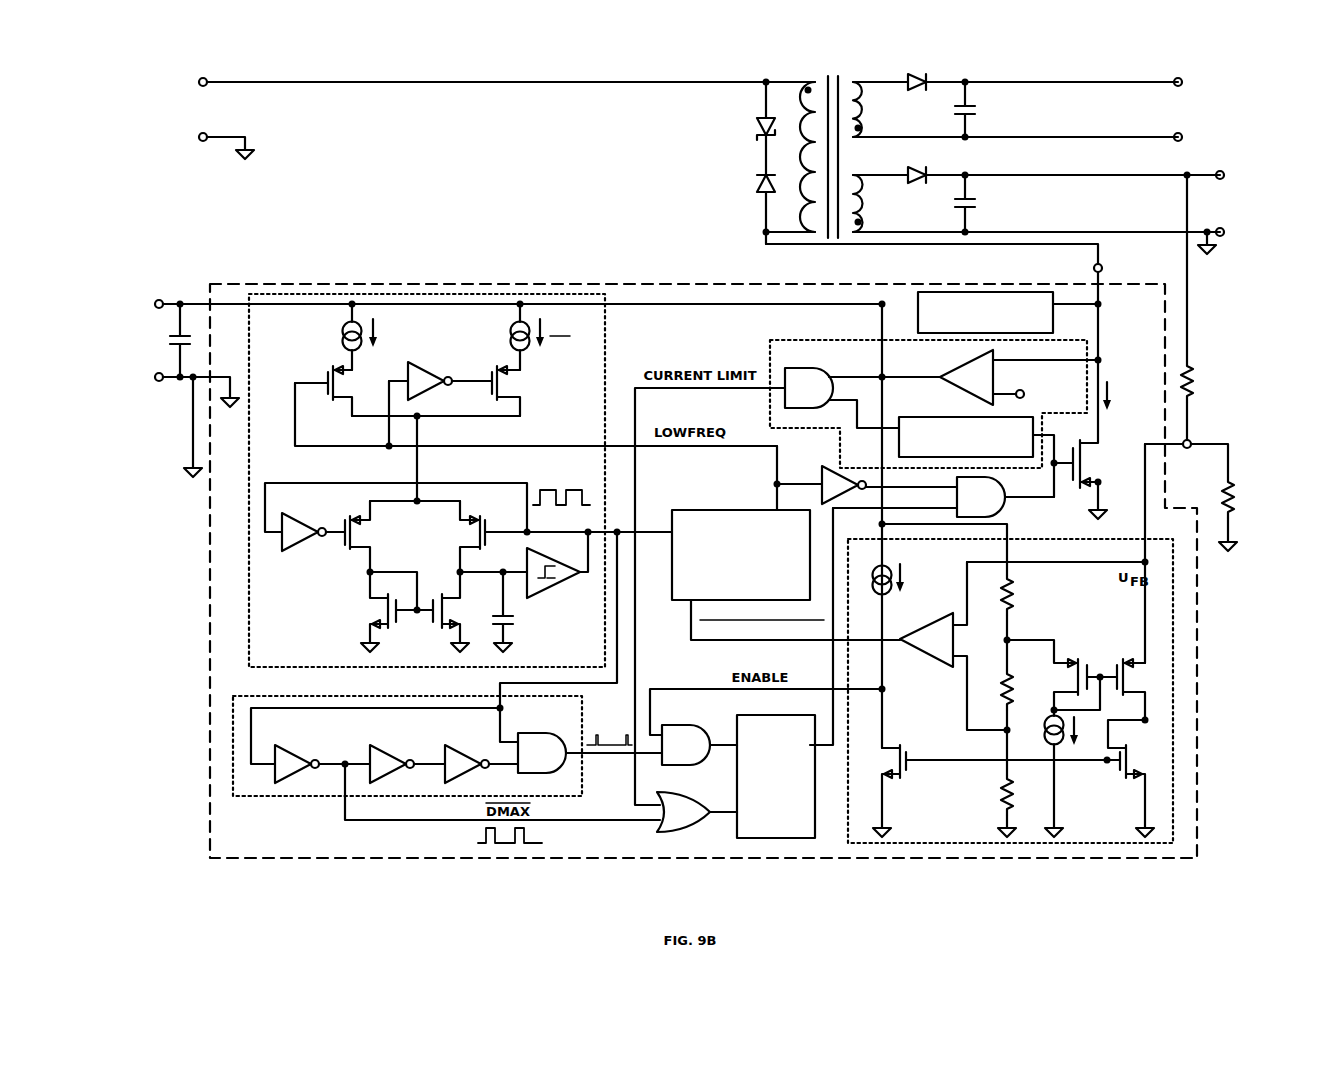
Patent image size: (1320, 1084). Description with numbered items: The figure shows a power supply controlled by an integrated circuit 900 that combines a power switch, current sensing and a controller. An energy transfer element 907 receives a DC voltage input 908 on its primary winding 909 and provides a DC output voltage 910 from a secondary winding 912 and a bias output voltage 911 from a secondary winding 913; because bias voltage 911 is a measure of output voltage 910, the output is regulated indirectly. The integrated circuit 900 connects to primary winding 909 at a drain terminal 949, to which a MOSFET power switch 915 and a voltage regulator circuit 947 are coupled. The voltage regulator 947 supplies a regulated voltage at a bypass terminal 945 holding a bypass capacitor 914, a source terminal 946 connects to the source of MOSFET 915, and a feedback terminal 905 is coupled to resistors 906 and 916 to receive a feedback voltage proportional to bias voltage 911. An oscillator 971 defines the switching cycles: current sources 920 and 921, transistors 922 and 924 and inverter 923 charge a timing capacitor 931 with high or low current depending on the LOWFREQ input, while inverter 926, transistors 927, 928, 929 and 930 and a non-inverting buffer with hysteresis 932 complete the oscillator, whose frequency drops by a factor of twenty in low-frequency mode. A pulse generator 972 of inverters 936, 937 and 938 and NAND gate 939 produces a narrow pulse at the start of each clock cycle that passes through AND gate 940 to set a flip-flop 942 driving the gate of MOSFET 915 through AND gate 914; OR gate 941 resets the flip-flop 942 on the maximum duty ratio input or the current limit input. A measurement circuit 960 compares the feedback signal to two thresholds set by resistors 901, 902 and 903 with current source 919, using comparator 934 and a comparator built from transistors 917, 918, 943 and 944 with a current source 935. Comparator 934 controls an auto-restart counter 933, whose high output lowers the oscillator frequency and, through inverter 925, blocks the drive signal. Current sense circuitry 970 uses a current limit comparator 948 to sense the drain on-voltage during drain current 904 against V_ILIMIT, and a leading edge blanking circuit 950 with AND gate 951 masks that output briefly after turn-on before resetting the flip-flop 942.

The integrated circuit 900 is at (703, 559).
The resistor 901 is at (1013, 601).
The resistor 902 is at (994, 691).
The resistor 903 is at (994, 783).
The drain current 904 is at (1124, 396).
The feedback terminal 905 is at (1186, 461).
The resistor 906 is at (1203, 307).
The energy transfer element 907 is at (806, 149).
The DC voltage input 908 is at (470, 137).
The primary winding 909 is at (786, 162).
The DC output voltage 910 is at (1120, 110).
The bias output voltage 911 is at (1155, 222).
The secondary winding 912 is at (1015, 107).
The secondary winding 913 is at (1036, 201).
The bypass capacitor 914 is at (592, 410).
The MOSFET power switch 915 is at (1093, 411).
The resistor 916 is at (1250, 533).
The transistor 917 is at (1062, 678).
The transistor 918 is at (1147, 689).
The current source 919 is at (1059, 777).
The current source 920 is at (355, 336).
The current source 921 is at (524, 336).
The transistor 922 is at (339, 391).
The inverter 923 is at (440, 373).
The transistor 924 is at (521, 391).
The inverter 925 is at (821, 483).
The inverter 926 is at (396, 528).
The transistor 927 is at (372, 536).
The transistor 928 is at (510, 536).
The transistor 929 is at (377, 612).
The transistor 930 is at (455, 612).
The timing capacitor 931 is at (501, 611).
The non-inverting buffer with hysteresis 932 is at (558, 544).
The auto-restart counter 933 is at (786, 543).
The comparator 934 is at (953, 646).
The current source 935 is at (884, 585).
The inverter 936 is at (322, 759).
The inverter 937 is at (407, 759).
The inverter 938 is at (481, 759).
The NAND gate 939 is at (590, 753).
The AND gate 940 is at (699, 745).
The OR gate 941 is at (697, 812).
The flip-flop 942 is at (776, 776).
The transistor 943 is at (982, 791).
The transistor 944 is at (1140, 778).
The bypass terminal 945 is at (501, 284).
The source terminal 946 is at (179, 431).
The voltage regulator circuit 947 is at (993, 312).
The current limit comparator 948 is at (1005, 377).
The drain terminal 949 is at (950, 274).
The leading edge blanking circuit 950 is at (976, 447).
The AND gate 951 is at (862, 398).
The measurement circuit 960 is at (1010, 682).
The current sense circuitry 970 is at (928, 404).
The oscillator 971 is at (413, 480).
The pulse generator 972 is at (403, 737).